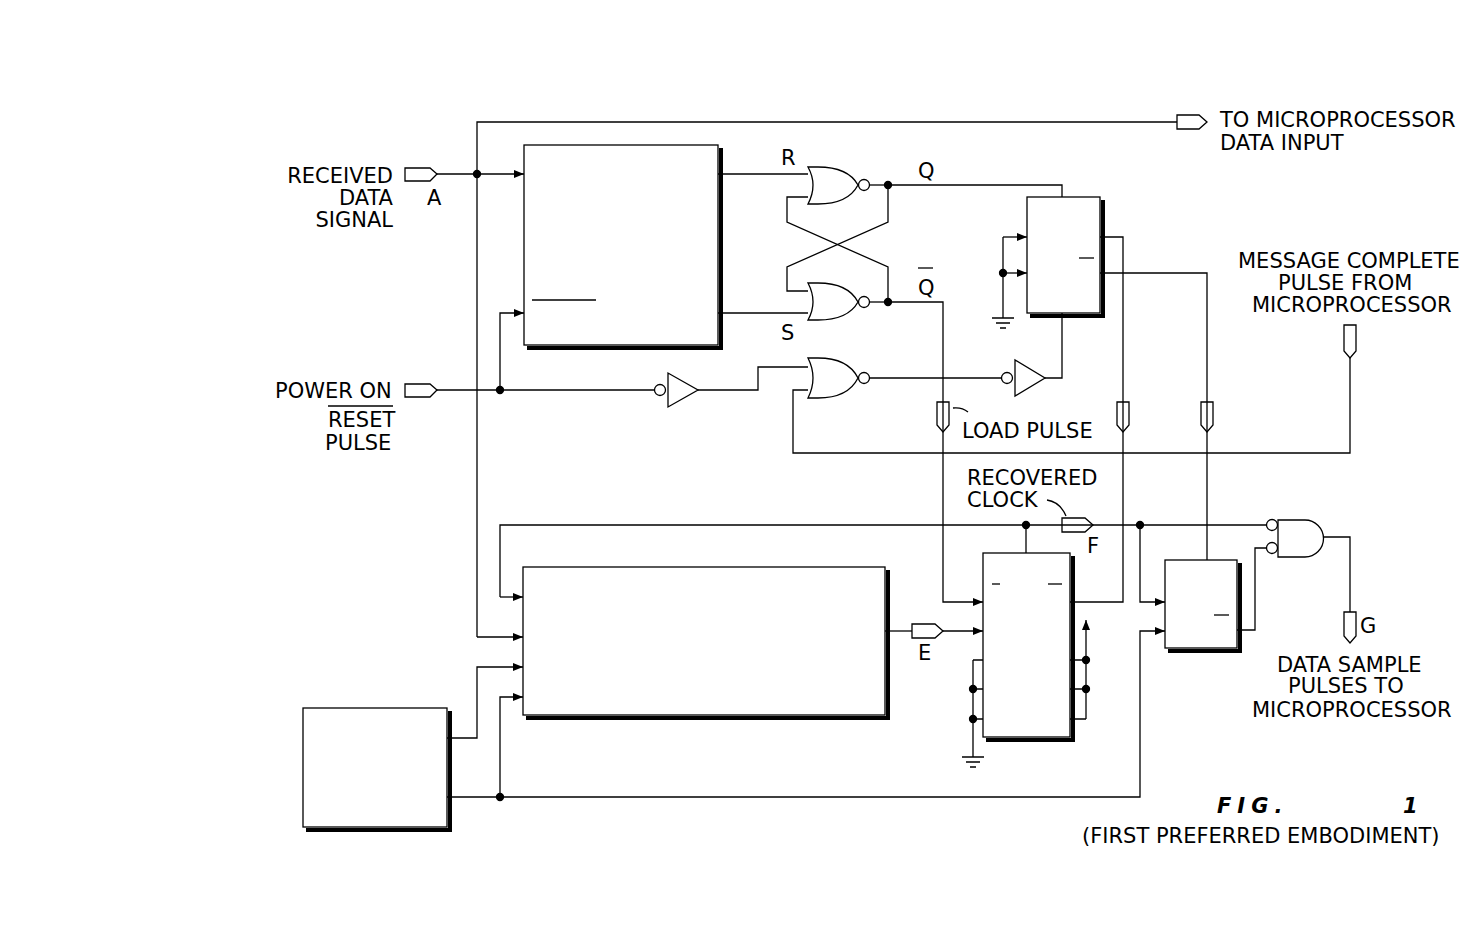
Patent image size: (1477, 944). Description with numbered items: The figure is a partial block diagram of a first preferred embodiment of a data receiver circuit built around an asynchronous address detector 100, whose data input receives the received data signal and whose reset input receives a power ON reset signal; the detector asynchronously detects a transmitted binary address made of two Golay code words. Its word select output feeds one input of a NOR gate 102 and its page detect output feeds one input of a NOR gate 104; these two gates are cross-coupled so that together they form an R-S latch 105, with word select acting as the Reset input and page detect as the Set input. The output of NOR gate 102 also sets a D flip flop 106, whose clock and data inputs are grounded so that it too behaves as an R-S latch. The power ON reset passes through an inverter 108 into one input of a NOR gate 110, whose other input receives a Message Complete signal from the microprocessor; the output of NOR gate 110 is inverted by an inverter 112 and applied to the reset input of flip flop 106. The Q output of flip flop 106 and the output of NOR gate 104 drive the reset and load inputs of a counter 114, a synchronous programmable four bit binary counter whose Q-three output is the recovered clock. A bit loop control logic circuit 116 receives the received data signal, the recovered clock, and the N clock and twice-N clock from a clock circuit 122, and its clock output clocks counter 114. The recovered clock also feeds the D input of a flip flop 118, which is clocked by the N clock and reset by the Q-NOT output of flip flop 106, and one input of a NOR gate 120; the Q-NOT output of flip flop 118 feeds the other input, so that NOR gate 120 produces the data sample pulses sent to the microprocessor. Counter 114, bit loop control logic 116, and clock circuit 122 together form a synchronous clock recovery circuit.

The asynchronous address detector 100 is at (617, 347).
The NOR gate 102 is at (830, 163).
The NOR gate 104 is at (853, 313).
The R-S latch 105 is at (888, 244).
The D flip flop 106 is at (1102, 208).
The inverter 108 is at (690, 395).
The NOR gate 110 is at (833, 402).
The inverter 112 is at (1008, 368).
The counter 114 is at (1050, 742).
The bit loop control logic circuit 116 is at (798, 720).
The flip flop 118 is at (1188, 653).
The NOR gate 120 is at (1302, 518).
The clock circuit 122 is at (352, 707).